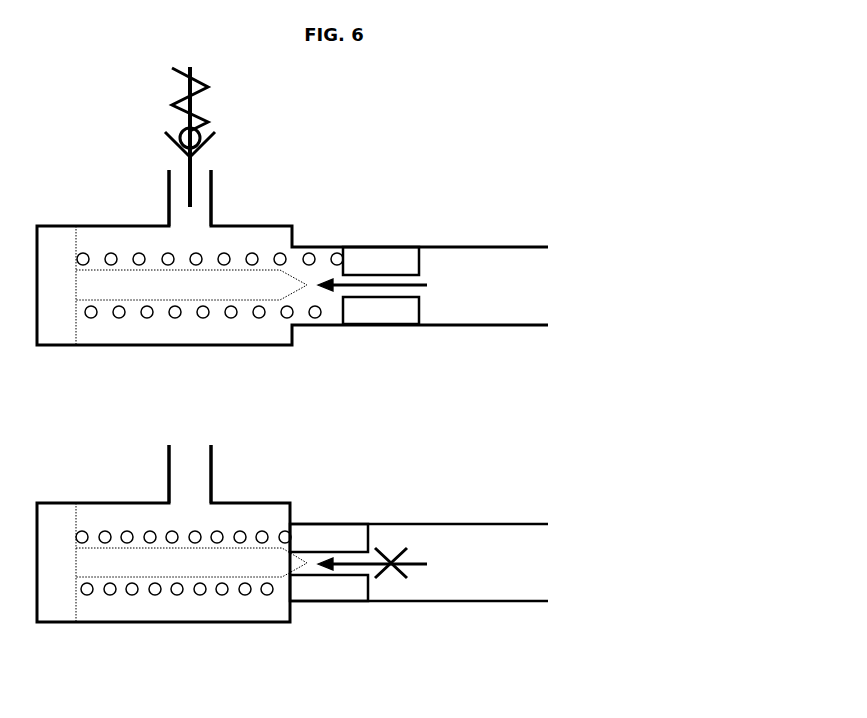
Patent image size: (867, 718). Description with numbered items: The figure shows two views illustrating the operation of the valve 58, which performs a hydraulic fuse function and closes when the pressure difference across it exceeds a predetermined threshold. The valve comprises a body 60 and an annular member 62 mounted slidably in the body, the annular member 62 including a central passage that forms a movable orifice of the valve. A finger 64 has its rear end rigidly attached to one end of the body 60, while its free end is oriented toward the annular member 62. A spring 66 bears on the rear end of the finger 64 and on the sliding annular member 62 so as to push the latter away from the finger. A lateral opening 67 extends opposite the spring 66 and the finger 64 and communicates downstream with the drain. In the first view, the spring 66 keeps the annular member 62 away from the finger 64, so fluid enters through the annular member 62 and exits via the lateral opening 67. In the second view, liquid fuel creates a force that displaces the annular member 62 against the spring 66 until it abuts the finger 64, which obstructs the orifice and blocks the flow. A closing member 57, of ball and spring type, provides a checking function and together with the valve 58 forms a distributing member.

The closing member 57 is at (222, 107).
The valve 58 is at (595, 280).
The body 60 is at (147, 346).
The annular member 62 is at (380, 262).
The finger 64 is at (222, 283).
The spring 66 is at (252, 257).
The lateral opening 67 is at (178, 190).